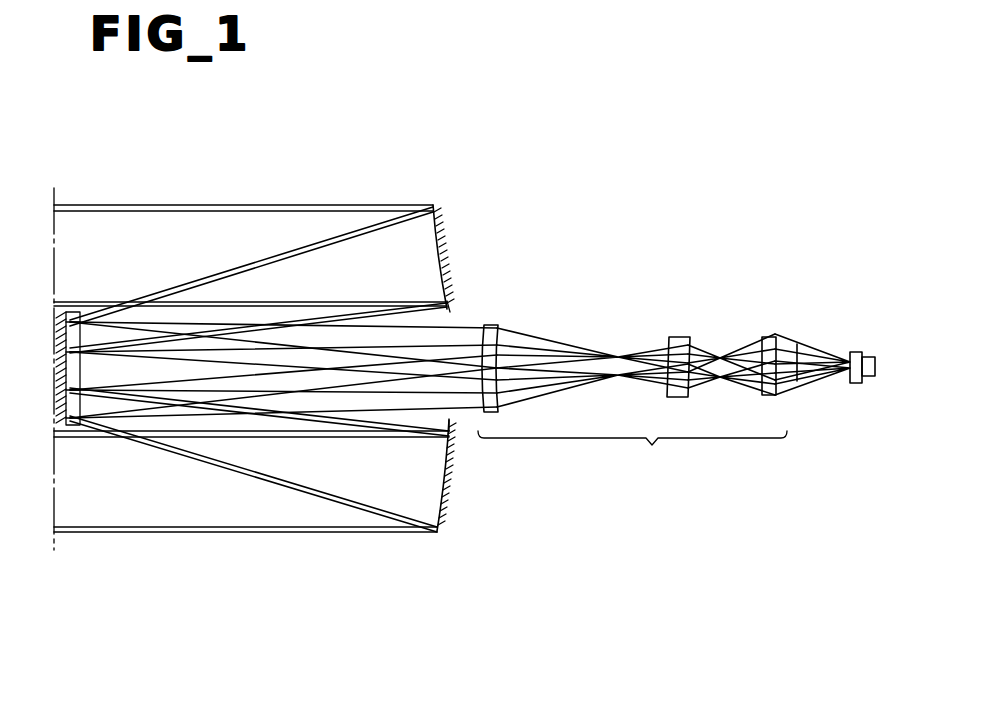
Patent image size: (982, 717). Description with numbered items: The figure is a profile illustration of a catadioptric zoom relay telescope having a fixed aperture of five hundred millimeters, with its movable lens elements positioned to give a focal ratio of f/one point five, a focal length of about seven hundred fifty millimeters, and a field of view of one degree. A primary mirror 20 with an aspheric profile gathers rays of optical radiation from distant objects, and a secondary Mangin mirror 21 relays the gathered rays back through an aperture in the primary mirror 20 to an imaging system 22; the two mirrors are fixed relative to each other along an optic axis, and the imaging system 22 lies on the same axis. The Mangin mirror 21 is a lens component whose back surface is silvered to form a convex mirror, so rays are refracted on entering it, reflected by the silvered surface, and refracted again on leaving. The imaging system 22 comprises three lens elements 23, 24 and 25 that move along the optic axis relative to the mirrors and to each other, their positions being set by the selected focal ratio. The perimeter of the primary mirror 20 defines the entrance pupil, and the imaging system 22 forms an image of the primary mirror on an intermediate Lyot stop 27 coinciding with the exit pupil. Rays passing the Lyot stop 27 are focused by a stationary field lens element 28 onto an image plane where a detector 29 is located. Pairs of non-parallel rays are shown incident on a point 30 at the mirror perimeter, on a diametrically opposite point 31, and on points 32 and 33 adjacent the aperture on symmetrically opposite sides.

The primary mirror 20 is at (440, 268).
The secondary Mangin mirror 21 is at (74, 310).
The imaging system 22 is at (632, 454).
The lens element 23 is at (496, 325).
The lens element 24 is at (672, 337).
The lens element 25 is at (768, 337).
The intermediate Lyot stop 27 is at (797, 345).
The field lens element 28 is at (856, 352).
The detector 29 is at (870, 382).
The point on the perimeter of the primary mirror 30 is at (433, 206).
The point on the perimeter of the primary mirror 31 is at (437, 531).
The point adjacent the aperture in the primary mirror 32 is at (456, 308).
The point adjacent the aperture in the primary mirror 33 is at (447, 433).